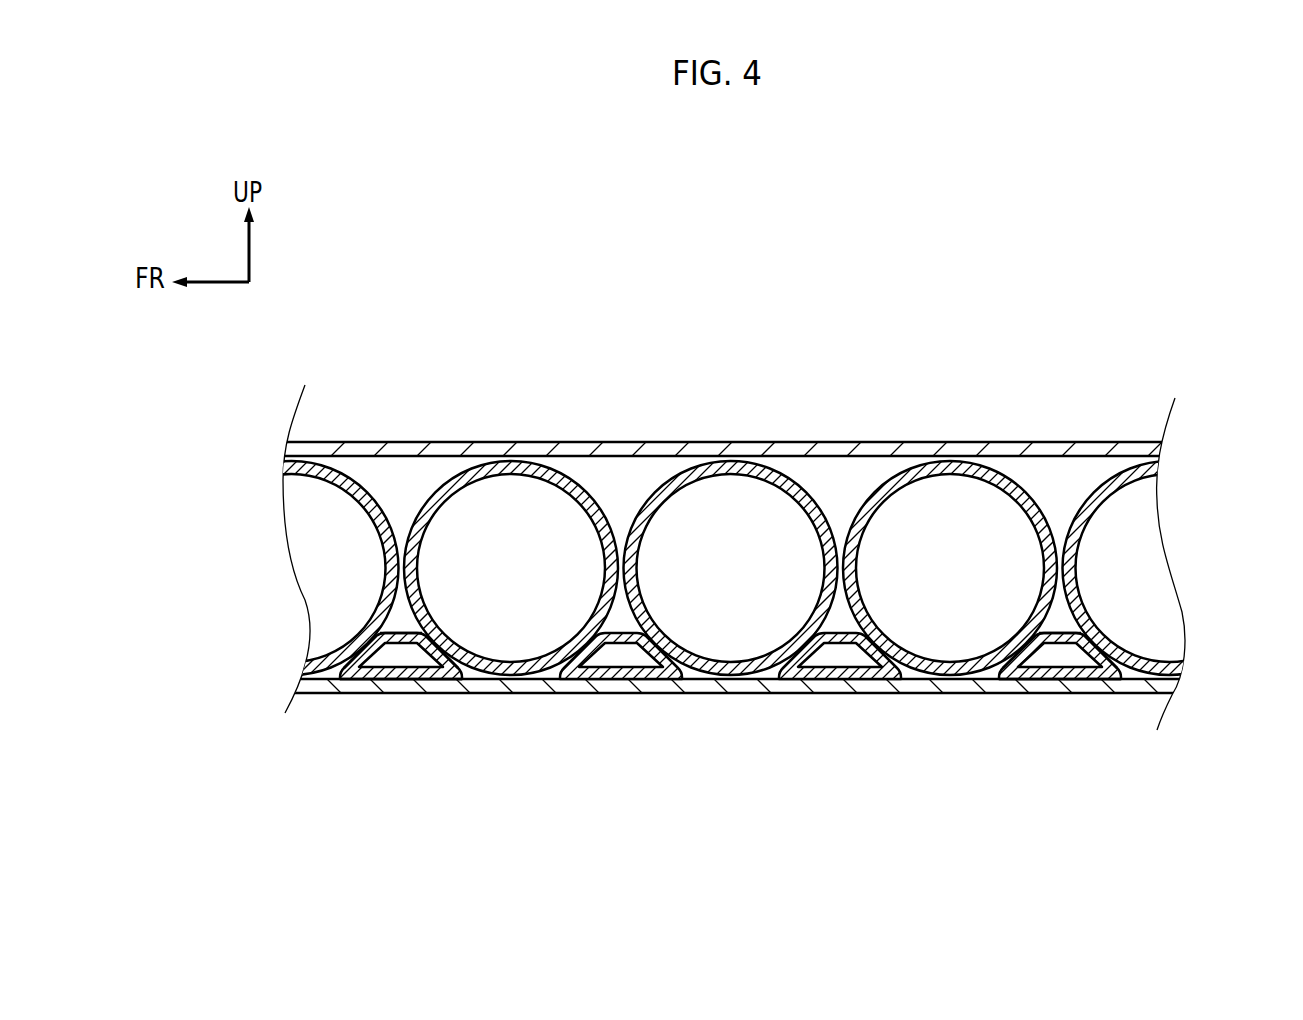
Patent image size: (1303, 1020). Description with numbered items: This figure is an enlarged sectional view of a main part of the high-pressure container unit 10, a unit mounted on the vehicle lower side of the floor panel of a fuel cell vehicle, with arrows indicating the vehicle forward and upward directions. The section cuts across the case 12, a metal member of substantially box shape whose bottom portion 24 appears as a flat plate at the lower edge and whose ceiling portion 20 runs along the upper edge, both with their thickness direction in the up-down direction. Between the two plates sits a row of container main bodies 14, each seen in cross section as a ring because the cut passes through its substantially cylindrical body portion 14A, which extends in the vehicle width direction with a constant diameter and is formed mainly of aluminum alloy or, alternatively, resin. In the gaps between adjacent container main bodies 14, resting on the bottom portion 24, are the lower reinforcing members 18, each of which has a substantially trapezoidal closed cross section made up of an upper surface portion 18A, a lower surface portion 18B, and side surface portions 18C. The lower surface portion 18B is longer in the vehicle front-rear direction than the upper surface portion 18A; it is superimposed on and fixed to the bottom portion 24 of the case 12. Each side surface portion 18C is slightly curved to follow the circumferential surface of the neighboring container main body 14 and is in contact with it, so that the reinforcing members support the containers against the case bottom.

The high-pressure container unit 10 is at (1038, 367).
The case 12 is at (730, 553).
The container main body 14 is at (660, 480).
The body portion 14A is at (438, 493).
The lower reinforcing member 18 is at (389, 679).
The upper surface portion 18A is at (402, 630).
The lower surface portion 18B is at (430, 694).
The side surface portion 18C is at (360, 642).
The ceiling portion 20 is at (913, 440).
The bottom portion 24 is at (607, 695).